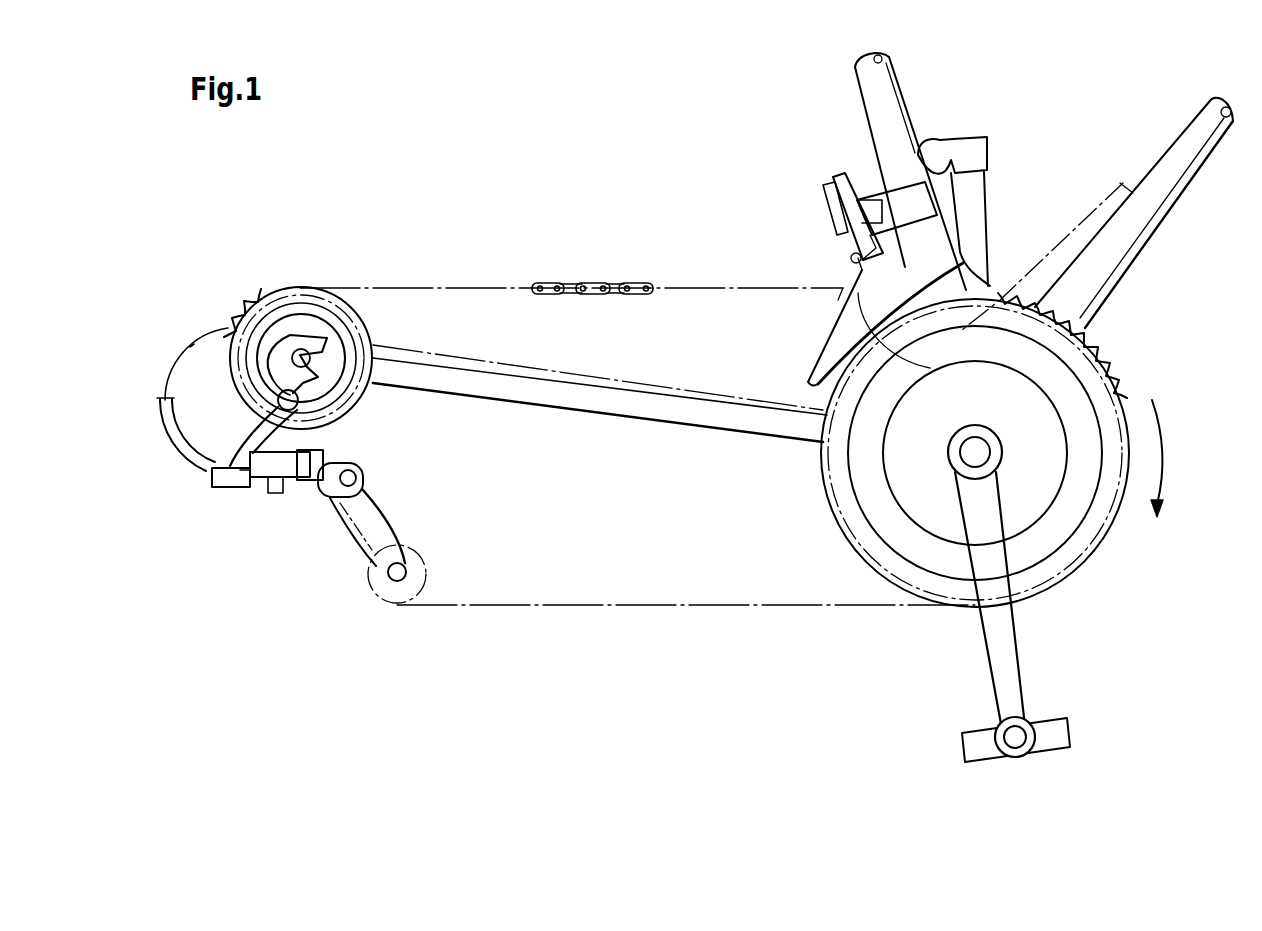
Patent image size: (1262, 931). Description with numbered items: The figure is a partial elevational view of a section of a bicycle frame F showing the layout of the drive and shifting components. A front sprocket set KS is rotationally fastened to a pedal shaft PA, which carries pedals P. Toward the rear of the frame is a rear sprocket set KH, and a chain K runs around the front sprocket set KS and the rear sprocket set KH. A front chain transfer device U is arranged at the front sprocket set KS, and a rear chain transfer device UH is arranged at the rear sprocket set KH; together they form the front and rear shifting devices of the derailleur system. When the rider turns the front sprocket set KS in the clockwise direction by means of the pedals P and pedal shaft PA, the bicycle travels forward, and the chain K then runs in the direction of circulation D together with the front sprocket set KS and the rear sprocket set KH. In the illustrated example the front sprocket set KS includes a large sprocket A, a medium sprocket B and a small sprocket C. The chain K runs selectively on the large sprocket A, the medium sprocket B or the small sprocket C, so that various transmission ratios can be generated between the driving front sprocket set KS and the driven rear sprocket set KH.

The bicycle frame F is at (1173, 157).
The front chain transfer device U is at (820, 306).
The chain K is at (597, 282).
The rear sprocket set KH is at (255, 297).
The rear chain transfer device UH is at (344, 556).
The large sprocket A is at (863, 557).
The medium sprocket B is at (857, 505).
The small sprocket C is at (843, 460).
The front sprocket set KS is at (1122, 366).
The direction of circulation D is at (1163, 443).
The pedal shaft PA is at (978, 457).
The pedals P is at (1060, 735).